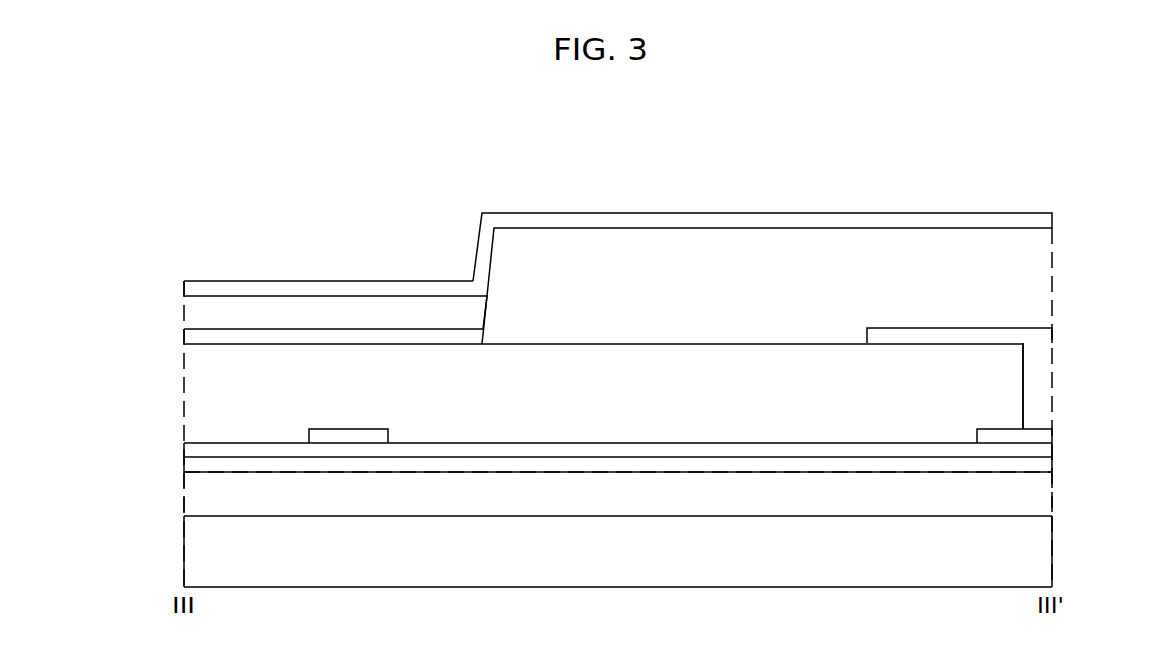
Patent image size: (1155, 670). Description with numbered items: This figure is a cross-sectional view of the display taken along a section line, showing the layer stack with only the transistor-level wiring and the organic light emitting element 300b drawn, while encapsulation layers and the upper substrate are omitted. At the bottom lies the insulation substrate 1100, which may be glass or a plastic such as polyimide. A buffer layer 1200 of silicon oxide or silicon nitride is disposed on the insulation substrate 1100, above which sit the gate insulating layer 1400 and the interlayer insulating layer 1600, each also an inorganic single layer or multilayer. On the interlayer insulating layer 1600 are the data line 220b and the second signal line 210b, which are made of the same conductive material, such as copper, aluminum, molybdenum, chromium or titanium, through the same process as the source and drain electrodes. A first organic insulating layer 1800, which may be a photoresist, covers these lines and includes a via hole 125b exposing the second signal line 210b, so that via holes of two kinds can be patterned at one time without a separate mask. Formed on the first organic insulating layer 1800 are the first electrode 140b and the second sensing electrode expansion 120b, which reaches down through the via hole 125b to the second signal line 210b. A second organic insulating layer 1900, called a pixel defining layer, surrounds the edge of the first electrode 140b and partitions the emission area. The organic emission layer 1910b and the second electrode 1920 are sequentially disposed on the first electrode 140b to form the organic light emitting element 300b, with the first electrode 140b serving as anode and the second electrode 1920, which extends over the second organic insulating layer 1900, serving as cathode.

The insulation substrate 1100 is at (1040, 553).
The buffer layer 1200 is at (1040, 505).
The gate insulating layer 1400 is at (1040, 466).
The interlayer insulating layer 1600 is at (1040, 449).
The data line 220b is at (312, 436).
The second signal line 210b is at (1038, 438).
The first organic insulating layer 1800 is at (195, 382).
The via hole 125b is at (1023, 372).
The second sensing electrode expansion 120b is at (1010, 328).
The organic light emitting element 300b is at (104, 255).
The first electrode 140b is at (195, 338).
The organic emission layer 1910b is at (195, 306).
The second electrode 1920 is at (192, 283).
The second organic insulating layer 1900 is at (1023, 248).